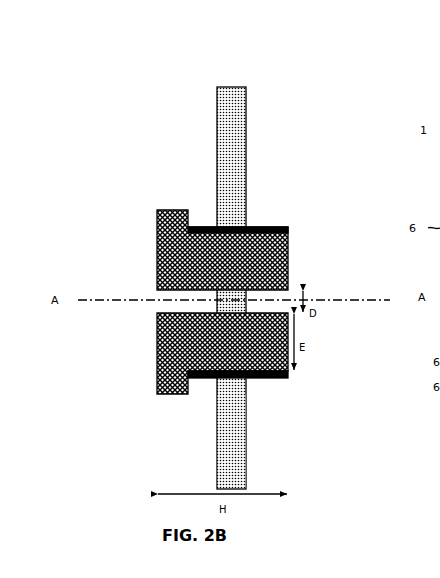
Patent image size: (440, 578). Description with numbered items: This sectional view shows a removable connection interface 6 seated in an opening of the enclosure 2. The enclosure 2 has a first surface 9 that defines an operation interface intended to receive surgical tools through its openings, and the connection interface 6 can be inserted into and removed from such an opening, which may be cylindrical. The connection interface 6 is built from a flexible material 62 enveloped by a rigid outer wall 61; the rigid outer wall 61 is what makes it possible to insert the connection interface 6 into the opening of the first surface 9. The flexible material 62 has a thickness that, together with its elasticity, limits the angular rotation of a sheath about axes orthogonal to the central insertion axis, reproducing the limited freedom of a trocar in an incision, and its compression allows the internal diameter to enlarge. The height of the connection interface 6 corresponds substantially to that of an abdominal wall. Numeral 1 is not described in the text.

The device assembly 1 is at (137, 177).
The enclosure 2 is at (217, 163).
The connection interface 6 is at (127, 275).
The first surface 9 is at (215, 445).
The rigid outer wall 61 is at (265, 228).
The flexible material 62 is at (288, 262).